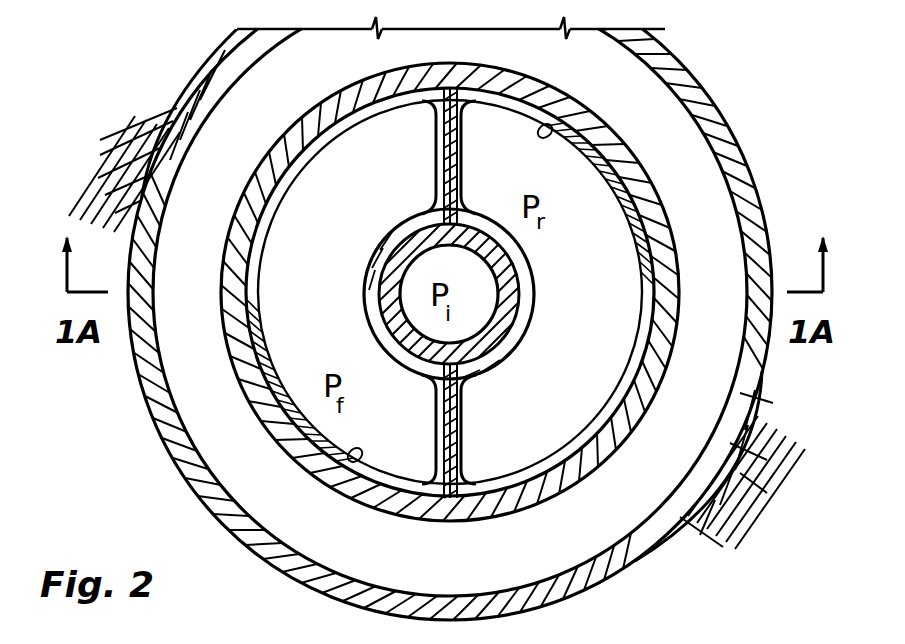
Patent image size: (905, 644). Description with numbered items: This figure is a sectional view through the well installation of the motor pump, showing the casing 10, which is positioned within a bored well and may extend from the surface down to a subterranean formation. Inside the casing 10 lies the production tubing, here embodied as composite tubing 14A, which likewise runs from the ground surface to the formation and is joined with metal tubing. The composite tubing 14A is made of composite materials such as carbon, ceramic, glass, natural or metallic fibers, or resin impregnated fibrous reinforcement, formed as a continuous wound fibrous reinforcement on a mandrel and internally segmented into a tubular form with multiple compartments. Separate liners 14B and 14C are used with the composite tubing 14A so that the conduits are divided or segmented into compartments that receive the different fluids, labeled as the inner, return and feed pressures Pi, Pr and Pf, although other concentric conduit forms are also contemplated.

The casing 10 is at (770, 247).
The composite tubing 14A is at (637, 197).
The liner 14B is at (560, 126).
The liner 14C is at (346, 470).